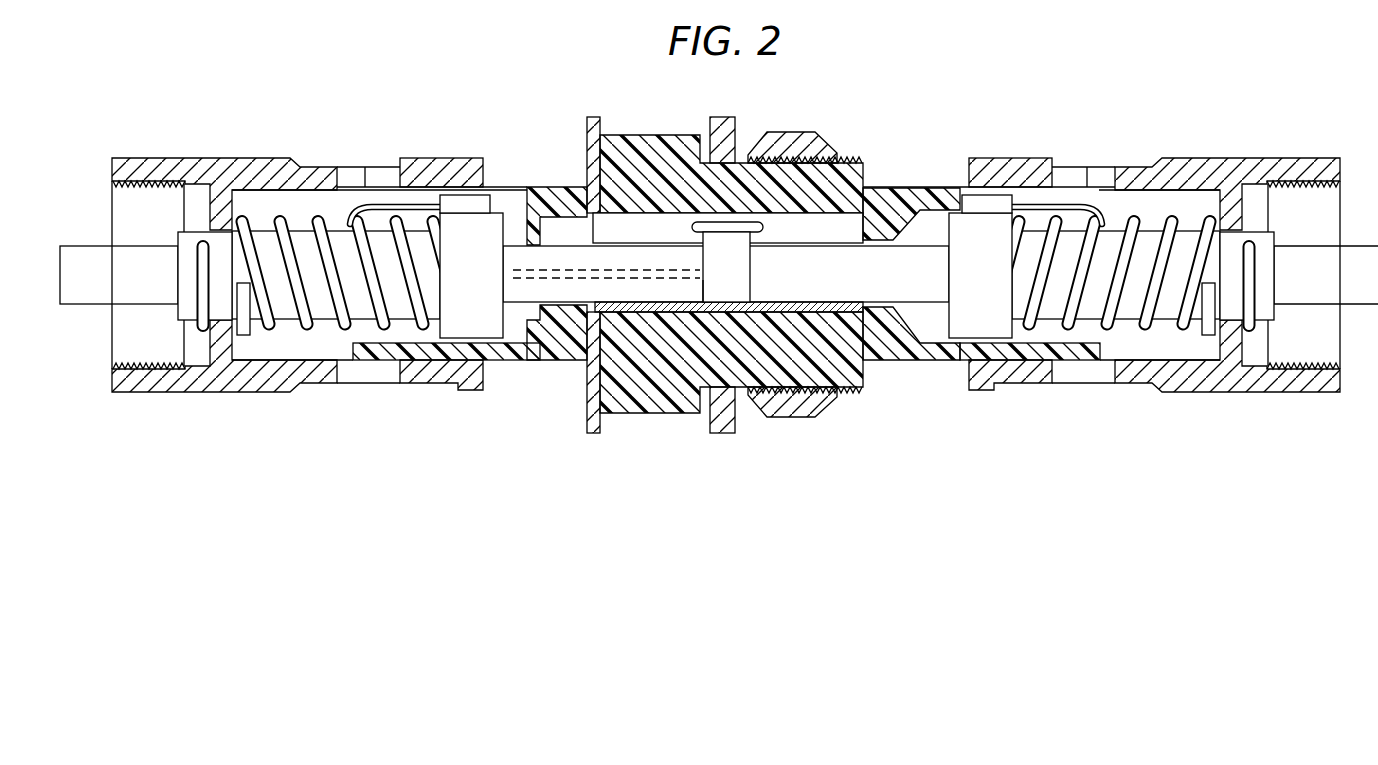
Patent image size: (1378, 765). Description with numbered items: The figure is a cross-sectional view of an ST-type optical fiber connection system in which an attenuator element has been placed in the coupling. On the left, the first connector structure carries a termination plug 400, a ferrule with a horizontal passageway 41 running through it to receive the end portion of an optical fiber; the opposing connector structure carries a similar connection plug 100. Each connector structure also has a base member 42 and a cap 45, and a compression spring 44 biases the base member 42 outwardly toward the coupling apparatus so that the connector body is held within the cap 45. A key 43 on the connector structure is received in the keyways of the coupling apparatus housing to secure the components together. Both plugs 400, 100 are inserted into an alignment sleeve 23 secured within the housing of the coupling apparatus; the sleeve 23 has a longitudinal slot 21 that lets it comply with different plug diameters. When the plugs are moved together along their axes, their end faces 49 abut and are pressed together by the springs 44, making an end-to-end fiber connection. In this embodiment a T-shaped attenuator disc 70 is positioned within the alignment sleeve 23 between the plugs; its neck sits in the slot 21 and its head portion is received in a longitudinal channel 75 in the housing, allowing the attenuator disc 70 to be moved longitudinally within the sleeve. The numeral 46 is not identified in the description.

The compression spring 44 is at (323, 222).
The key 43 is at (1000, 202).
The connection plug 100 is at (930, 263).
The horizontal passageway 41 is at (548, 270).
The termination plug 400 is at (578, 257).
The longitudinal slot 21 is at (643, 247).
The longitudinal channel 75 is at (673, 228).
The attenuator disc 70 is at (752, 287).
The end face 49 is at (703, 283).
The alignment sleeve 23 is at (852, 313).
The base member 42 is at (972, 360).
The sleeve 46 is at (1126, 312).
The cap 45 is at (1185, 377).